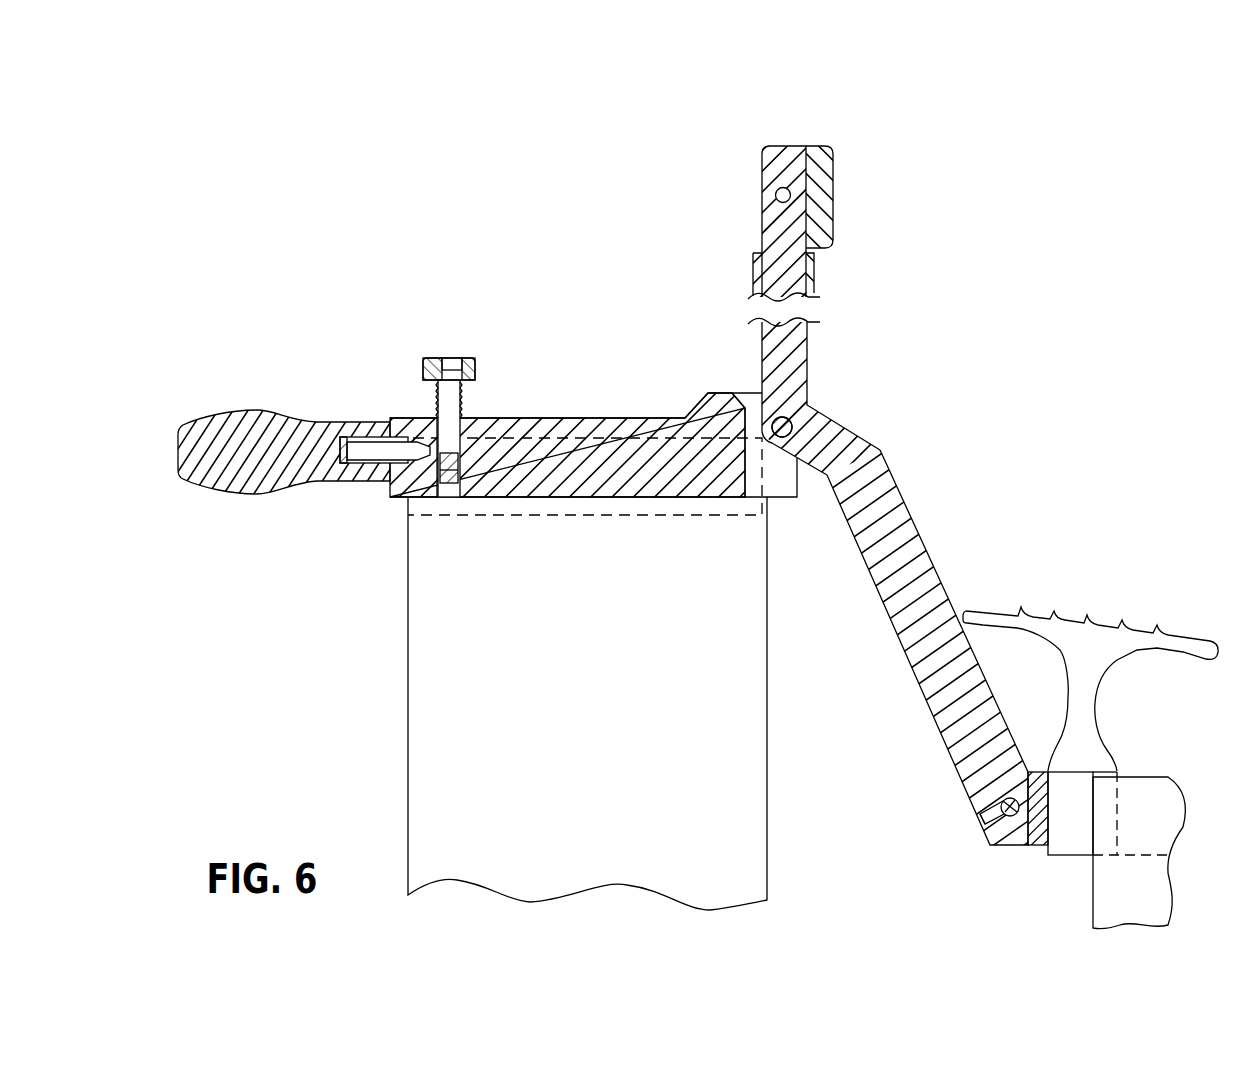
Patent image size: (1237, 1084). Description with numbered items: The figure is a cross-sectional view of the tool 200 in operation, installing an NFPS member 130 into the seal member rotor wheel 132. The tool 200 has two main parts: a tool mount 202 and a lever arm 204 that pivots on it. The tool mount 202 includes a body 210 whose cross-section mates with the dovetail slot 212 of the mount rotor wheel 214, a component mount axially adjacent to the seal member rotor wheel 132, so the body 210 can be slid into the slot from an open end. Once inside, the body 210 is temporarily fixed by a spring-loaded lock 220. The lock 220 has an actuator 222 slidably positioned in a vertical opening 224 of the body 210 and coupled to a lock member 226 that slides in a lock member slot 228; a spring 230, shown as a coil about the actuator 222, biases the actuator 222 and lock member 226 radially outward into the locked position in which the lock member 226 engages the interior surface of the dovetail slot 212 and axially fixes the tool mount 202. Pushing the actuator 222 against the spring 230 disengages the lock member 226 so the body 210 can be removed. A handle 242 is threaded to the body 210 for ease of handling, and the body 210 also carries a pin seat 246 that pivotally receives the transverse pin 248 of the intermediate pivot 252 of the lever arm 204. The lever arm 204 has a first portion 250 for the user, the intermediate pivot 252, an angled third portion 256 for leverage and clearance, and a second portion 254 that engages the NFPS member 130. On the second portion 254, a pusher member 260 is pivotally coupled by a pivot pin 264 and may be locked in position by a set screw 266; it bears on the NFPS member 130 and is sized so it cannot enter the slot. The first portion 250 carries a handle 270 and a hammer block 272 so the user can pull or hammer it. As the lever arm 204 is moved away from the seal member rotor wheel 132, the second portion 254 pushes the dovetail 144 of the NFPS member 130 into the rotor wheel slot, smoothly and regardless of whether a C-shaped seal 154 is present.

The NFPS member 130 is at (1128, 645).
The seal member rotor wheel 132 is at (1118, 895).
The dovetail 144 is at (1075, 825).
The C-shaped seal 154 is at (1128, 812).
The tool 200 is at (509, 223).
The tool mount 202 is at (568, 445).
The lever arm 204 is at (750, 209).
The body 210 is at (513, 478).
The dovetail slot 212 is at (610, 517).
The mount rotor wheel 214 is at (432, 657).
The spring-loaded lock 220 is at (424, 340).
The actuator 222 is at (443, 470).
The vertical opening 224 is at (437, 435).
The lock member 226 is at (418, 480).
The lock member slot 228 is at (449, 483).
The spring 230 is at (440, 400).
The handle 242 is at (248, 432).
The pin seat 246 is at (780, 468).
The transverse pin 248 is at (782, 427).
The first portion 250 is at (792, 224).
The intermediate pivot 252 is at (837, 639).
The second portion 254 is at (925, 755).
The third portion 256 is at (867, 424).
The pusher member 260 is at (1033, 770).
The pivot pin 264 is at (1008, 847).
The set screw 266 is at (983, 820).
The handle 270 is at (827, 280).
The hammer block 272 is at (849, 218).